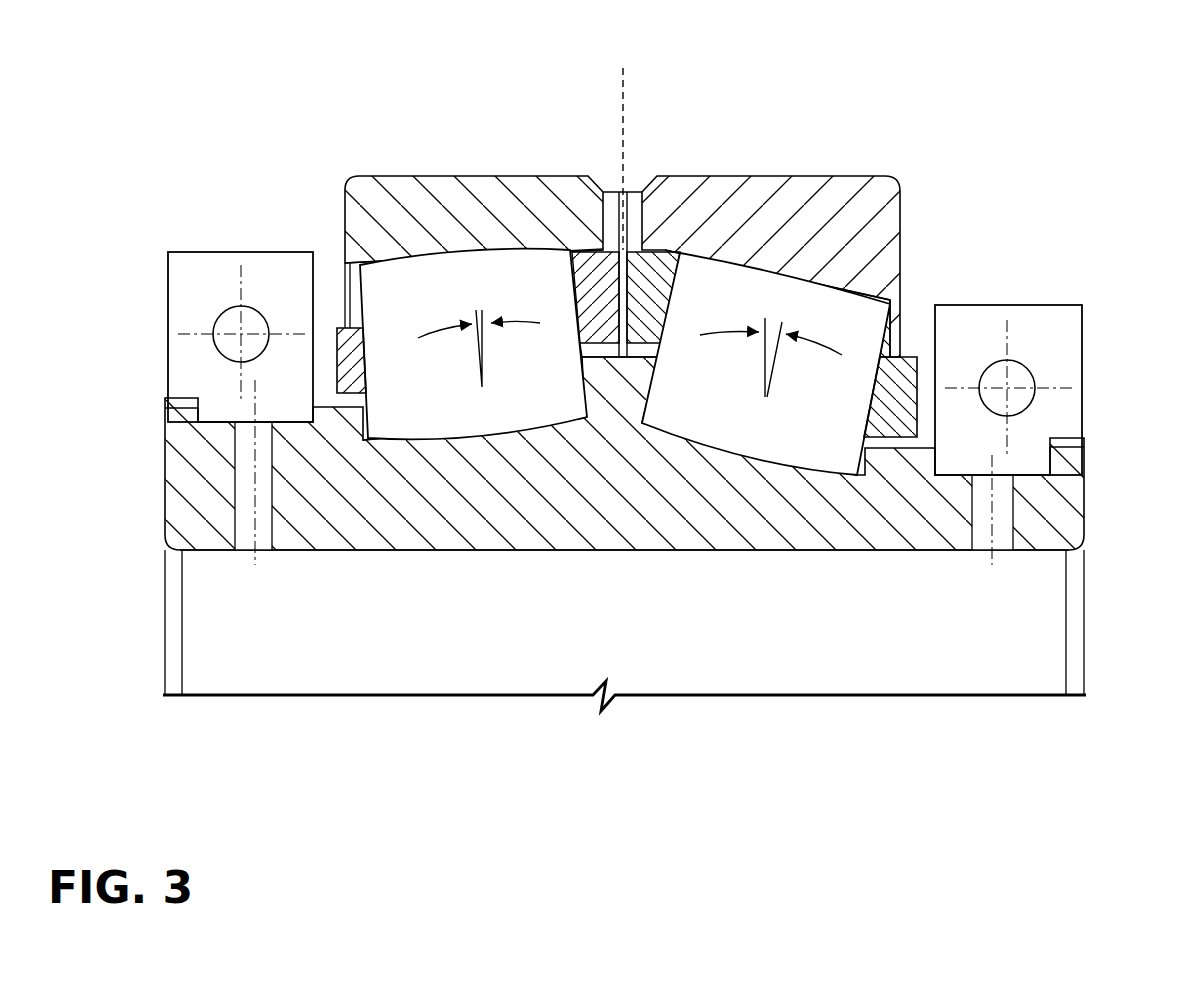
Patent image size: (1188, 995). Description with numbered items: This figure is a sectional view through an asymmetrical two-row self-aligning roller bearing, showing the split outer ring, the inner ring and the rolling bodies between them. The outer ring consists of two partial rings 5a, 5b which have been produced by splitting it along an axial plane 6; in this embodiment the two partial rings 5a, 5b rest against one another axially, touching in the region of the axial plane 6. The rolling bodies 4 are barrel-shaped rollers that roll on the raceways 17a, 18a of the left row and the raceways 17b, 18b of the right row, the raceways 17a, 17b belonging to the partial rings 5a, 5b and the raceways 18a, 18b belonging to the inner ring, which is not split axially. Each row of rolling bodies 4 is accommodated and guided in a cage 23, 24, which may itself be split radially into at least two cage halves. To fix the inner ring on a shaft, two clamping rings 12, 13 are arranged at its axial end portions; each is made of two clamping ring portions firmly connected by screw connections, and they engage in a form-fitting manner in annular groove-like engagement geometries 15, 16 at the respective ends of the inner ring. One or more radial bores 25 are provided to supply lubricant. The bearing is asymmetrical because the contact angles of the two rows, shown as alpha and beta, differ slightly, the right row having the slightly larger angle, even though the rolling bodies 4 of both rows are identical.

The rolling bodies 4 is at (393, 285).
The partial ring 5a is at (400, 159).
The partial ring 5b is at (854, 156).
The axial plane 6 is at (625, 95).
The clamping ring 12 is at (207, 275).
The clamping ring 13 is at (1038, 328).
The engagement geometry 15 is at (215, 429).
The engagement geometry 16 is at (1048, 484).
The raceway 17a is at (499, 250).
The raceway 17b is at (768, 262).
The raceway 18a is at (492, 432).
The raceway 18b is at (783, 462).
The cage 23 is at (353, 378).
The cage 24 is at (892, 417).
The radial bore 25 is at (616, 213).